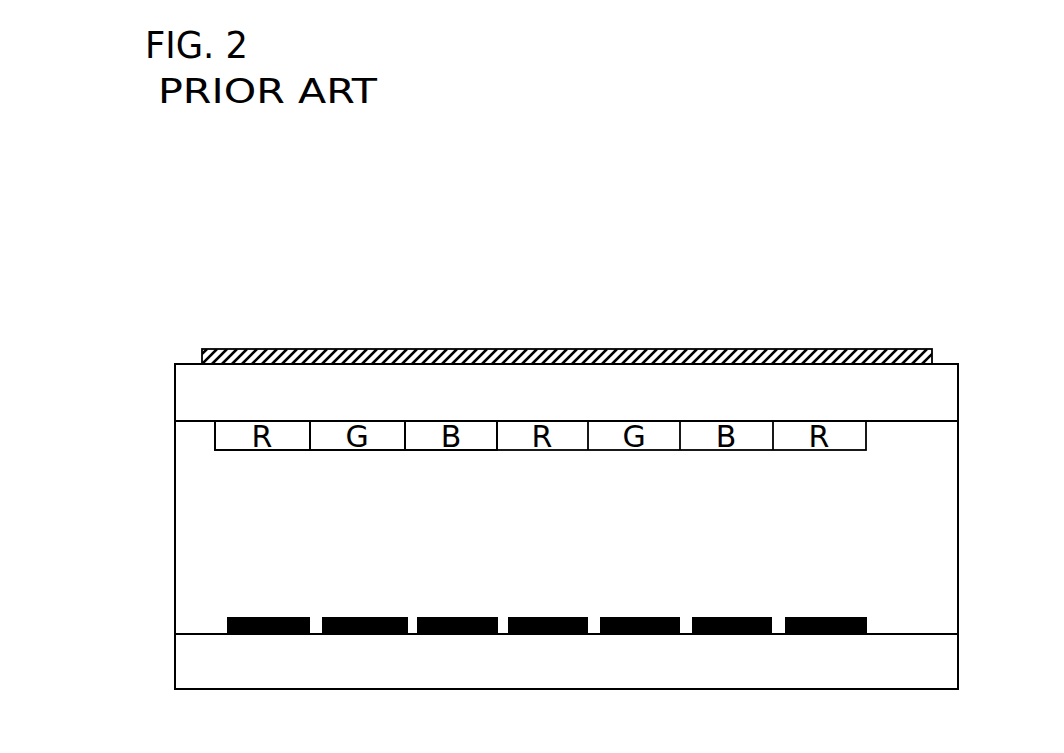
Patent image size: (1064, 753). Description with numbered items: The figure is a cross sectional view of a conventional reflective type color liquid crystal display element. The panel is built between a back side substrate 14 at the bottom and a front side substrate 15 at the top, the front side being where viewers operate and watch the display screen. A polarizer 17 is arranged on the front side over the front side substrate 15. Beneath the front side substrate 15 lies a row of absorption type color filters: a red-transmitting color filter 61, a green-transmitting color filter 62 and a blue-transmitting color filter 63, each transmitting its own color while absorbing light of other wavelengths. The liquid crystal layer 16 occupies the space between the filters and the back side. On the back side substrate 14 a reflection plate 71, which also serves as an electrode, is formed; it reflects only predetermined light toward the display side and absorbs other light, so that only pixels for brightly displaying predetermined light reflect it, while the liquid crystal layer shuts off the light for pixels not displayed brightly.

The back side substrate 14 is at (188, 632).
The front side substrate 15 is at (202, 392).
The liquid crystal layer 16 is at (222, 513).
The polarizer 17 is at (365, 349).
The absorption type color filter for transmitting red light 61 is at (287, 421).
The absorption type color filter for transmitting green light 62 is at (373, 421).
The absorption type color filter for transmitting blue light 63 is at (465, 421).
The reflection plate 71 is at (840, 617).